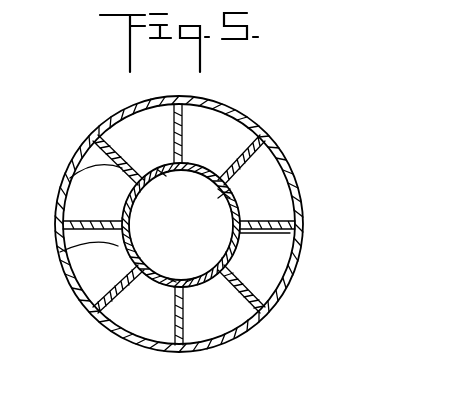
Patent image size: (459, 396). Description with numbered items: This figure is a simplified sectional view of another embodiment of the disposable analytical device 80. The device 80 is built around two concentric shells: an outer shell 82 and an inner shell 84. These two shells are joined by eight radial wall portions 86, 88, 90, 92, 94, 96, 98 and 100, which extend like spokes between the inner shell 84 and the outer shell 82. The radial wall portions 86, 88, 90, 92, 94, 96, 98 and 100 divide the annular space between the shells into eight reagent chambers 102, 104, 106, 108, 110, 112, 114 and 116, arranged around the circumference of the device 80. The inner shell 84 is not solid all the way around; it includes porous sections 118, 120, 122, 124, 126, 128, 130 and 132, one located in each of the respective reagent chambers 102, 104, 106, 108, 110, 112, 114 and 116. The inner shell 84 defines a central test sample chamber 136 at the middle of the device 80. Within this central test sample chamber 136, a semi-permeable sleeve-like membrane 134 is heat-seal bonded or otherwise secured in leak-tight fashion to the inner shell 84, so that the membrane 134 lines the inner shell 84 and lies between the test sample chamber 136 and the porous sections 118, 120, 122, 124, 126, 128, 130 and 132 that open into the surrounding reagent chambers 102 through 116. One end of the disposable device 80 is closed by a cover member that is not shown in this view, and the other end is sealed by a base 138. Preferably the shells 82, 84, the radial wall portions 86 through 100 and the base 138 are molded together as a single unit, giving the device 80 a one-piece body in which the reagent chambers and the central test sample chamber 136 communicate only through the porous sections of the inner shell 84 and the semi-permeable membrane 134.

The disposable analytical device 80 is at (383, 92).
The outer shell 82 is at (232, 122).
The inner shell 84 is at (253, 128).
The radial wall portion 86 is at (203, 108).
The radial wall portion 88 is at (250, 148).
The radial wall portion 90 is at (297, 213).
The radial wall portion 92 is at (285, 290).
The radial wall portion 94 is at (161, 350).
The radial wall portion 96 is at (101, 322).
The radial wall portion 98 is at (63, 242).
The radial wall portion 100 is at (88, 153).
The reagent chamber 102 is at (231, 145).
The reagent chamber 104 is at (282, 203).
The reagent chamber 106 is at (276, 277).
The reagent chamber 108 is at (229, 325).
The reagent chamber 110 is at (159, 321).
The reagent chamber 112 is at (107, 275).
The reagent chamber 114 is at (107, 203).
The reagent chamber 116 is at (150, 145).
The porous section 118 is at (195, 171).
The porous section 120 is at (220, 196).
The porous section 122 is at (243, 243).
The porous section 124 is at (192, 278).
The porous section 126 is at (105, 299).
The porous section 128 is at (60, 252).
The porous section 130 is at (80, 166).
The porous section 132 is at (162, 176).
The semi-permeable sleeve-like membrane 134 is at (170, 278).
The central test sample chamber 136 is at (191, 248).
The base 138 is at (280, 261).